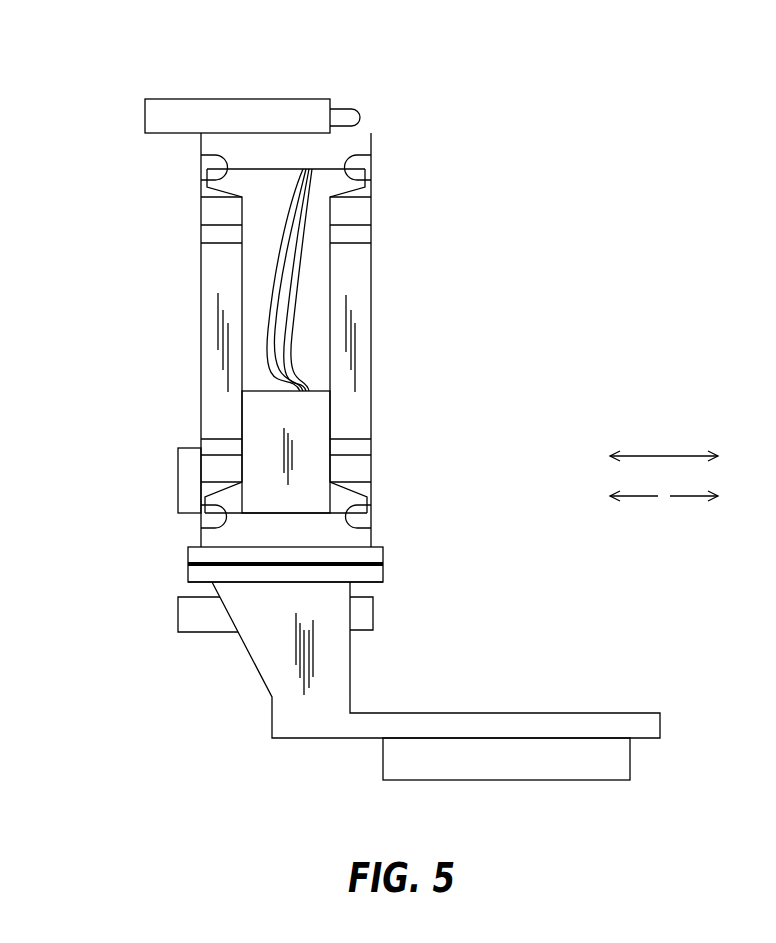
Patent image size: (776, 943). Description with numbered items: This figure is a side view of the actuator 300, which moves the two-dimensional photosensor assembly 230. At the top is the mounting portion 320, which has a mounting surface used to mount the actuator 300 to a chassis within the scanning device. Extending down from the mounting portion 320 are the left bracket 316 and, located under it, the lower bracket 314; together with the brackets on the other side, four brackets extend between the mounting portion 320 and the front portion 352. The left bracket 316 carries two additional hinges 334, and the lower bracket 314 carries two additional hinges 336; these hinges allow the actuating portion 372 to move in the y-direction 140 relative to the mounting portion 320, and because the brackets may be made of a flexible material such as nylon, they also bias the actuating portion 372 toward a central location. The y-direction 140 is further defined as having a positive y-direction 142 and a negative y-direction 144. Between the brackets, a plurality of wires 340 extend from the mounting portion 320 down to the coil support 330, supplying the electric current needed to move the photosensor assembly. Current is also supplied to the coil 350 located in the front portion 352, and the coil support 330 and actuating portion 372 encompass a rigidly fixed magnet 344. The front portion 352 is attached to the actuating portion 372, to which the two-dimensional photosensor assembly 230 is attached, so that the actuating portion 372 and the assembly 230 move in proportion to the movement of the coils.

The actuator 300 is at (593, 145).
The mounting portion 320 is at (237, 99).
The additional hinges 336 is at (200, 154).
The additional hinges 334 is at (372, 154).
The lower bracket 314 is at (210, 338).
The left bracket 316 is at (375, 341).
The wires 340 is at (302, 273).
The coil support 330 is at (332, 412).
The magnet 344 is at (178, 480).
The coil 350 is at (383, 563).
The front portion 352 is at (385, 583).
The actuating portion 372 is at (303, 738).
The two-dimensional photosensor assembly 230 is at (632, 767).
The y-direction 140 is at (663, 455).
The positive y-direction 142 is at (683, 497).
The negative y-direction 144 is at (647, 497).